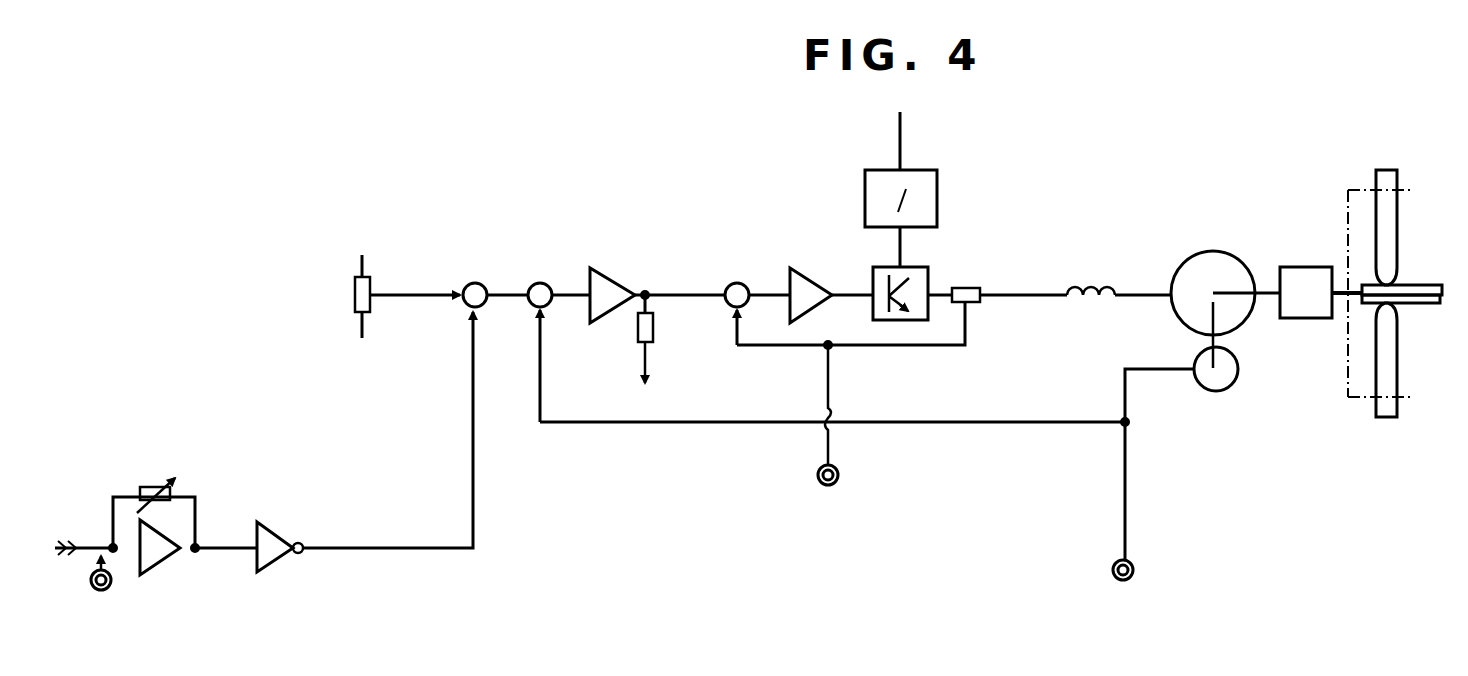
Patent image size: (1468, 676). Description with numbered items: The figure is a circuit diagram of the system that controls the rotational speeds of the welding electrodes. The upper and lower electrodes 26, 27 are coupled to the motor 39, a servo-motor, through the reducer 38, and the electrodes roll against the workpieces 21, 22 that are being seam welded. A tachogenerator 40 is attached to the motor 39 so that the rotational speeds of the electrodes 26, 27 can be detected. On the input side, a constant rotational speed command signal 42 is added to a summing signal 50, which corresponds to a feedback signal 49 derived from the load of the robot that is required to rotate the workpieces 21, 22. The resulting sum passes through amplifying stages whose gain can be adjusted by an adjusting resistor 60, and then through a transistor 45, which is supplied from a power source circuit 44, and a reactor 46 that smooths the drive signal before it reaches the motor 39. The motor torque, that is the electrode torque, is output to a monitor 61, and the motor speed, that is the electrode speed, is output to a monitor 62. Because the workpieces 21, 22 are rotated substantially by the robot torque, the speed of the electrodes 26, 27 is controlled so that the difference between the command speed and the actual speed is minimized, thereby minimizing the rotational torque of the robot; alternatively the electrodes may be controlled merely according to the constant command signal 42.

The workpiece 21 is at (1420, 284).
The workpiece 22 is at (1418, 305).
The upper electrode 26 is at (1393, 222).
The lower electrode 27 is at (1390, 380).
The reducer 38 is at (1294, 320).
The motor 39 is at (1213, 251).
The tachogenerator 40 is at (1231, 386).
The constant rotational speed command signal 42 is at (361, 275).
The power source circuit 44 is at (903, 152).
The transistor 45 is at (955, 263).
The reactor 46 is at (1086, 284).
The feedback signal 49 is at (105, 546).
The summing signal 50 is at (475, 516).
The adjusting resistor 60 is at (657, 330).
The monitor 61 is at (840, 478).
The monitor 62 is at (1135, 573).